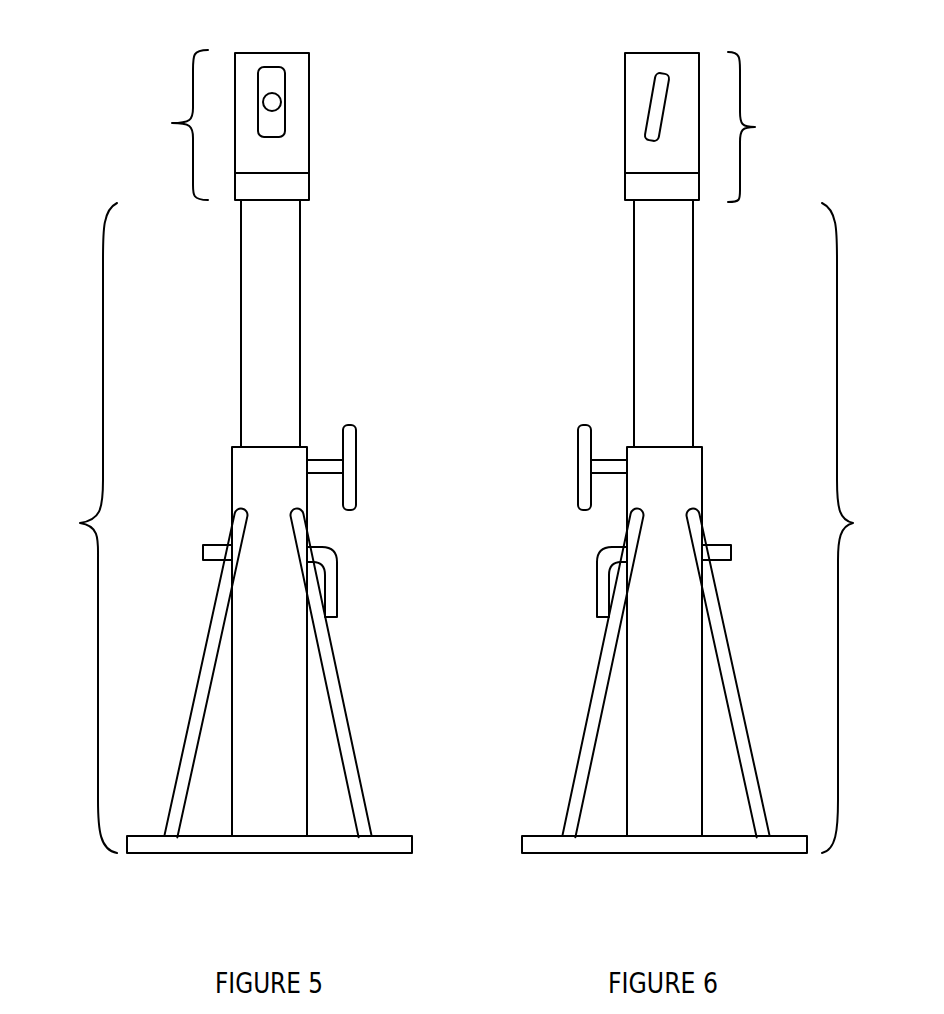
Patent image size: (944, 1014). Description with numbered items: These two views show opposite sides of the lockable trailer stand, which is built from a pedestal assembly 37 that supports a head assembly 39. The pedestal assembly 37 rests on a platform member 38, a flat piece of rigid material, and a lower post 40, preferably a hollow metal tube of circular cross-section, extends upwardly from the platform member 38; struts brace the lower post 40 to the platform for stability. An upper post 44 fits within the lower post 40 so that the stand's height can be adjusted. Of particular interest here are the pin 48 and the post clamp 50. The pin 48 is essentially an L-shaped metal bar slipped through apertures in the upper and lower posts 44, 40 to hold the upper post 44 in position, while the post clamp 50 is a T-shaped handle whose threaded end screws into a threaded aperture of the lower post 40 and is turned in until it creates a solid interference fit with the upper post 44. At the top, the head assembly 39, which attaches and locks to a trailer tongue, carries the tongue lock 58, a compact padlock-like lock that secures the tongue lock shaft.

In FIG. 5, the pedestal assembly 37 is at (80, 523).
In FIG. 6, the pedestal assembly 37 is at (853, 523).
In FIG. 5, the platform member 38 is at (357, 857).
In FIG. 6, the platform member 38 is at (583, 857).
In FIG. 5, the head assembly 39 is at (172, 123).
In FIG. 6, the head assembly 39 is at (755, 127).
In FIG. 5, the lower post 40 is at (273, 735).
In FIG. 6, the lower post 40 is at (643, 738).
In FIG. 5, the upper post 44 is at (300, 335).
In FIG. 6, the upper post 44 is at (633, 340).
In FIG. 5, the pin 48 is at (338, 592).
In FIG. 6, the pin 48 is at (597, 595).
In FIG. 5, the post clamp 50 is at (357, 492).
In FIG. 6, the post clamp 50 is at (578, 495).
In FIG. 5, the tongue lock 58 is at (287, 90).